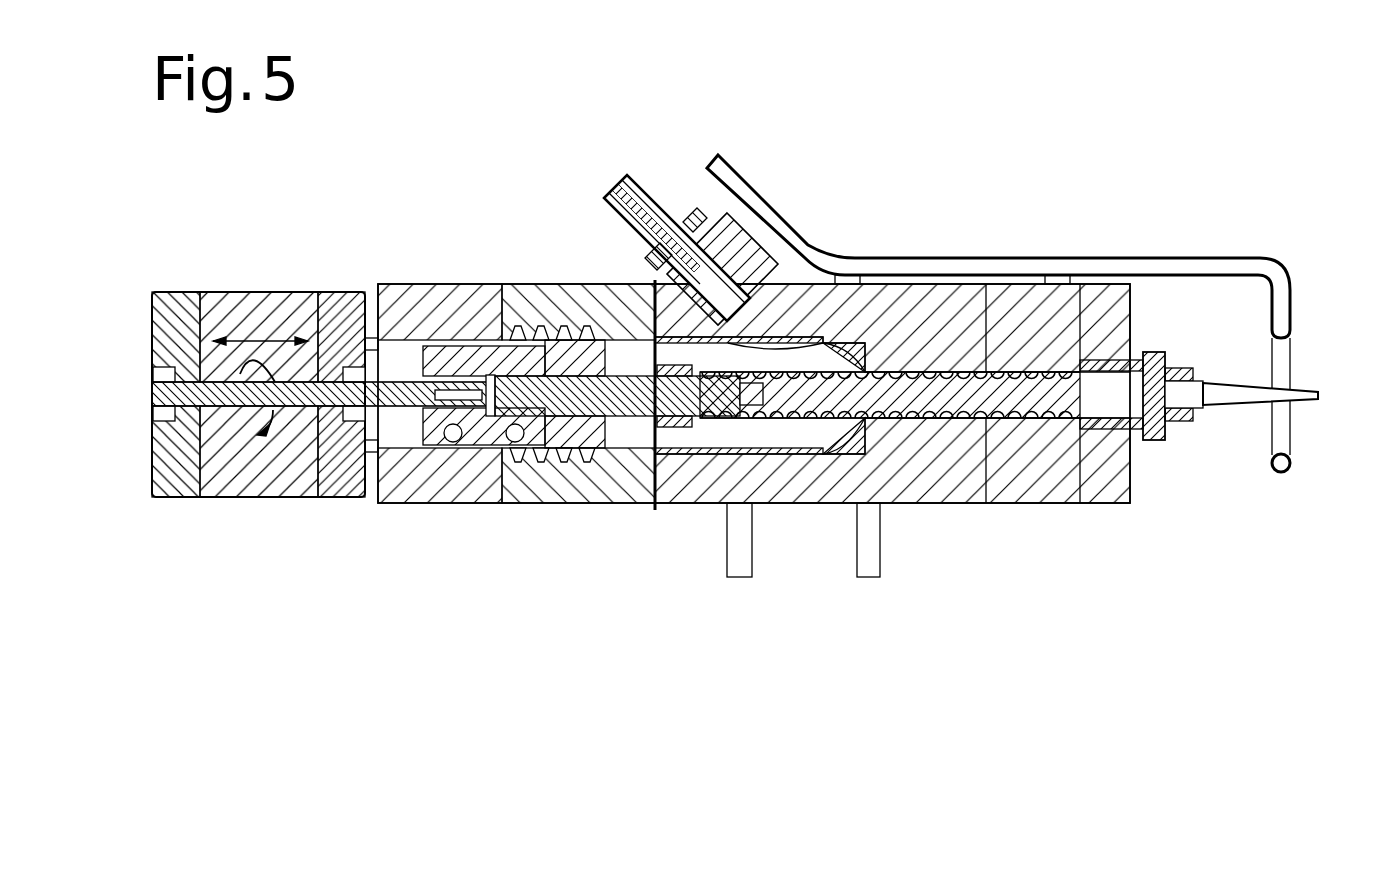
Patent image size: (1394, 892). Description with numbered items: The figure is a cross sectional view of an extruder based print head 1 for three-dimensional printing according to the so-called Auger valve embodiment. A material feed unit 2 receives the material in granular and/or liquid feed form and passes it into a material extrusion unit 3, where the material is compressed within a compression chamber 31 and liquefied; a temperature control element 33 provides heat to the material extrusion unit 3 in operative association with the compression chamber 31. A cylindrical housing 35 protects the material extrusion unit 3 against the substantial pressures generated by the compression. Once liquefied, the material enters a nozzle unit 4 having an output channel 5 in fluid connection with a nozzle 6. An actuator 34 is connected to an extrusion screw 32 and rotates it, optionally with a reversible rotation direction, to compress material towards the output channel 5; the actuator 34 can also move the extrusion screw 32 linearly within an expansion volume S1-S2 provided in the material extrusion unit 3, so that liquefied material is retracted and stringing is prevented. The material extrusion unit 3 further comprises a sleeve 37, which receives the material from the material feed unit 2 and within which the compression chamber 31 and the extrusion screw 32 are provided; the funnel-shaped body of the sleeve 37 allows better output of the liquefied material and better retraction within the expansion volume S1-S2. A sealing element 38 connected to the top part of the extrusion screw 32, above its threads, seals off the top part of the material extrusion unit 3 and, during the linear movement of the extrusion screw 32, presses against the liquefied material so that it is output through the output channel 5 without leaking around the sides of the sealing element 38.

The extruder based print head 1 is at (766, 359).
The material feed unit 2 is at (650, 197).
The material extrusion unit 3 is at (532, 258).
The nozzle unit 4 is at (1242, 448).
The output channel 5 is at (1182, 397).
The nozzle 6 is at (1303, 385).
The compression chamber 31 is at (657, 503).
The extrusion screw 32 is at (838, 490).
The temperature control element 33 is at (1143, 262).
The actuator 34 is at (300, 291).
The cylindrical housing 35 is at (518, 503).
The sleeve 37 is at (705, 503).
The sealing element 38 is at (610, 488).
The expansion volume limit S1 is at (1082, 503).
The expansion volume limit S2 is at (987, 503).